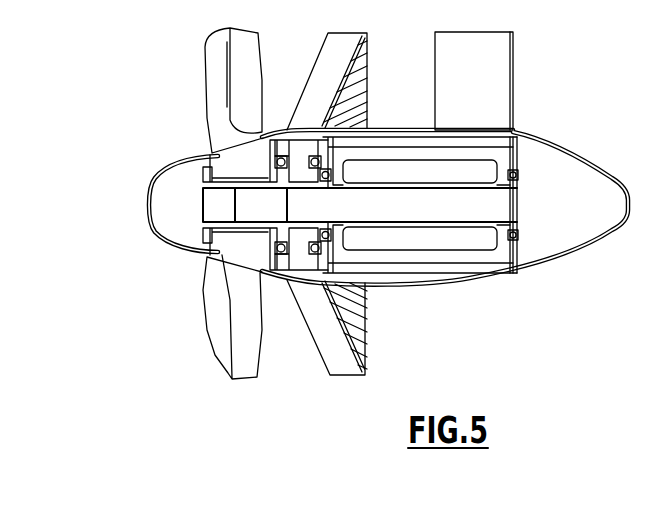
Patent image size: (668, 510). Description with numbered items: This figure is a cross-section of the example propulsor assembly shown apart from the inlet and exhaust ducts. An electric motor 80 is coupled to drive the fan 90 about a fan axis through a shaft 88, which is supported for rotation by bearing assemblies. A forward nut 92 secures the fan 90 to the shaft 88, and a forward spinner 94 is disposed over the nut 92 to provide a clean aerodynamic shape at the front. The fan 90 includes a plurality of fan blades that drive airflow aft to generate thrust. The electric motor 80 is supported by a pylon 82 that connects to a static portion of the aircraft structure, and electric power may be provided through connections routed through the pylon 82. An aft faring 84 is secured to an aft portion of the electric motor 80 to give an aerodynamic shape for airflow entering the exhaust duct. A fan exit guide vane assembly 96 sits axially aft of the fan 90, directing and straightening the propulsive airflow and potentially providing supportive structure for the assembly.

The electric motor 80 is at (438, 248).
The pylon 82 is at (498, 75).
The aft faring 84 is at (577, 238).
The shaft 88 is at (253, 202).
The fan 90 is at (242, 363).
The forward nut 92 is at (207, 243).
The forward spinner 94 is at (173, 223).
The fan exit guide vane assembly 96 is at (345, 360).